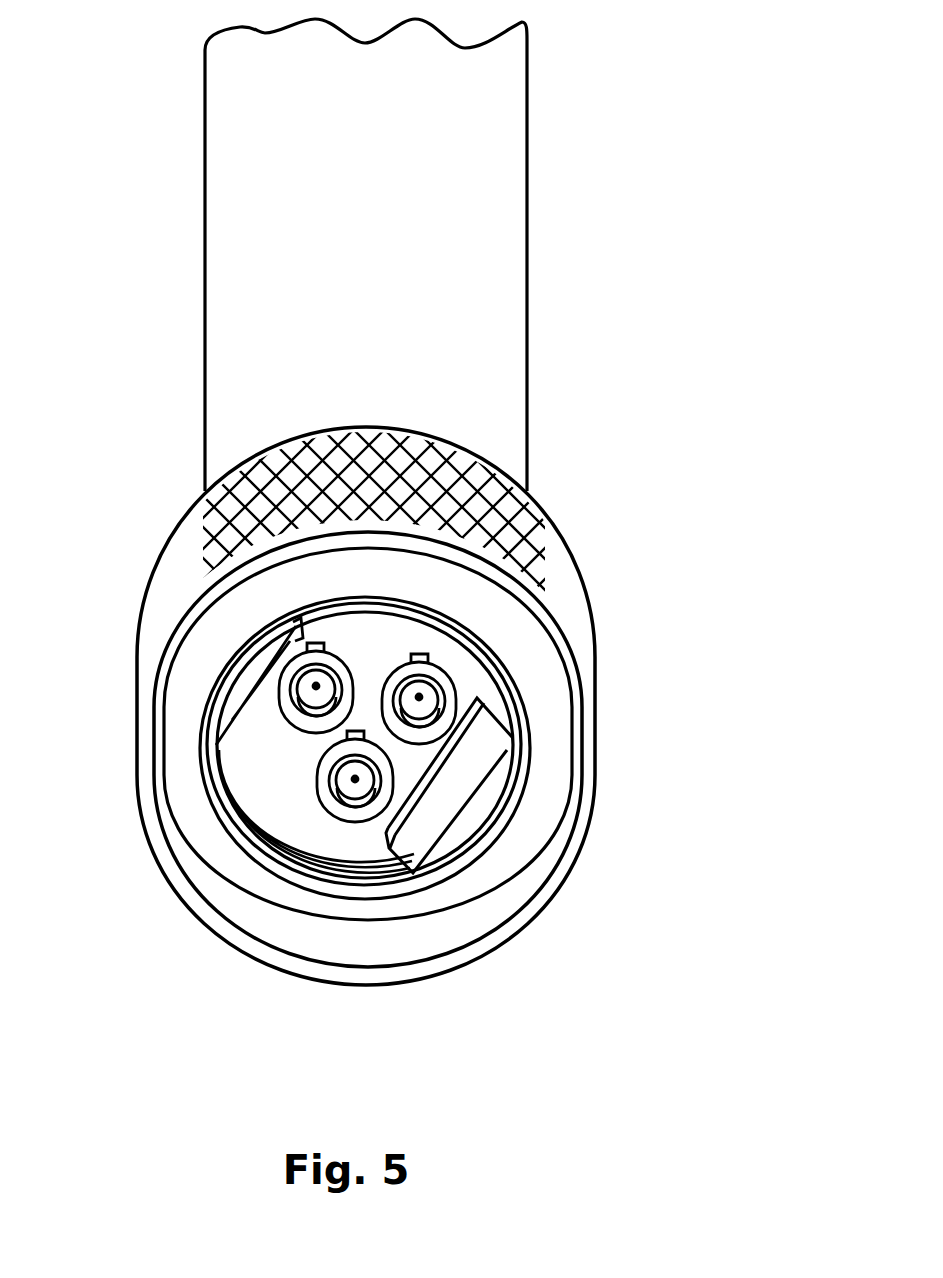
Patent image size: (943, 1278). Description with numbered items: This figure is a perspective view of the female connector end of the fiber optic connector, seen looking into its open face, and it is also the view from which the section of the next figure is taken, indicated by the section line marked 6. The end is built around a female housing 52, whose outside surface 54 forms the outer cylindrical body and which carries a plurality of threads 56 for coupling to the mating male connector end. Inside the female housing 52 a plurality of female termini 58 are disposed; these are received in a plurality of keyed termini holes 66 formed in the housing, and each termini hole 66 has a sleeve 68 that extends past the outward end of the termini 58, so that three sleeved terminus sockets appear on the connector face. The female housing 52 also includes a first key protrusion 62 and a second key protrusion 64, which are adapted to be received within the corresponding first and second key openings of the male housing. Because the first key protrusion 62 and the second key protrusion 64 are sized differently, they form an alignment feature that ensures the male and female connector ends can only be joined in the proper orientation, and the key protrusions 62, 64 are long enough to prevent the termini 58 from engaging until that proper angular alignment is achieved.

The section line for FIG. 6 is at (178, 565).
The female housing 52 is at (612, 815).
The outside surface 54 is at (487, 950).
The threads 56 is at (141, 609).
The female termini 58 is at (355, 780).
The first key protrusion 62 is at (472, 822).
The second key protrusion 64 is at (263, 662).
The keyed termini holes 66 is at (340, 632).
The sleeve 68 is at (382, 761).